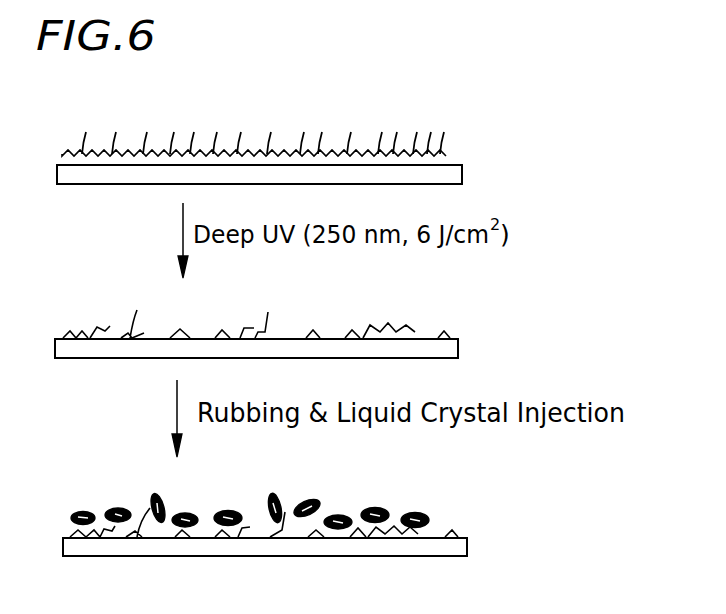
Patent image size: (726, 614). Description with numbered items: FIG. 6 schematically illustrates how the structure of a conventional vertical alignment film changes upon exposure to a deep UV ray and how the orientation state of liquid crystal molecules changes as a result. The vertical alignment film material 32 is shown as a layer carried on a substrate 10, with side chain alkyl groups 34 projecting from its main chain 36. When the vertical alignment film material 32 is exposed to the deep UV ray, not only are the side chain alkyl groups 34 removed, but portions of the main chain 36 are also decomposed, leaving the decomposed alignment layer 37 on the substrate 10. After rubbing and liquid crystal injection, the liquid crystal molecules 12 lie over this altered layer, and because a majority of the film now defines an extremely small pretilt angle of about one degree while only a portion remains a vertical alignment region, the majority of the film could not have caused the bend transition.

The substrate 10 is at (468, 175).
The vertical alignment film material 32 is at (458, 120).
The side chain alkyl groups 34 is at (426, 148).
The main chain 36 is at (385, 146).
The UV-decomposed alignment layer 37 is at (407, 322).
The liquid crystal molecules 12 is at (437, 517).